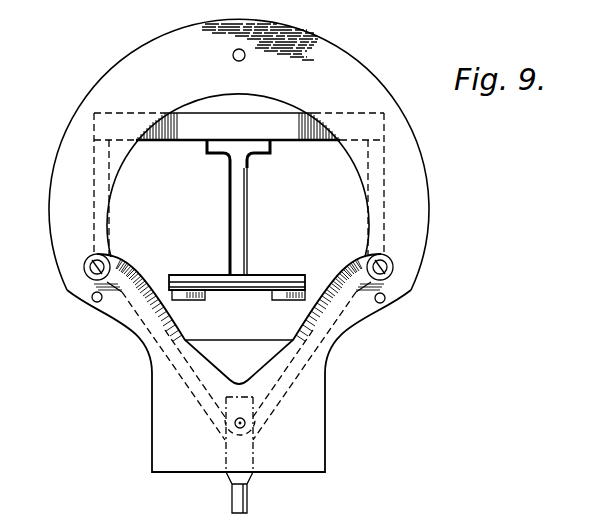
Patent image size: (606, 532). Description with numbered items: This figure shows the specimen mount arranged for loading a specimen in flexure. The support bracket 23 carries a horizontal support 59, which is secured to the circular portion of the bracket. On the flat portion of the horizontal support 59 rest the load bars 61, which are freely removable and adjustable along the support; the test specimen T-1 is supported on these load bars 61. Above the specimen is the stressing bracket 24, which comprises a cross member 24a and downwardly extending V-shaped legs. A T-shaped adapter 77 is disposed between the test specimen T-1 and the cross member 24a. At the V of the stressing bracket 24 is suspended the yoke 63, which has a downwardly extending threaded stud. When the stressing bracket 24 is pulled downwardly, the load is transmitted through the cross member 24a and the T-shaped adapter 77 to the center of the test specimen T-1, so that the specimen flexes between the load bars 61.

The bracket 23 is at (85, 97).
The stressing bracket 24 is at (197, 110).
The cross member 24a is at (143, 150).
The T-shaped adapter 77 is at (243, 197).
The test specimen T-1 is at (266, 272).
The load bars 61 is at (182, 294).
The horizontal support 59 is at (217, 332).
The yoke 63 is at (242, 477).